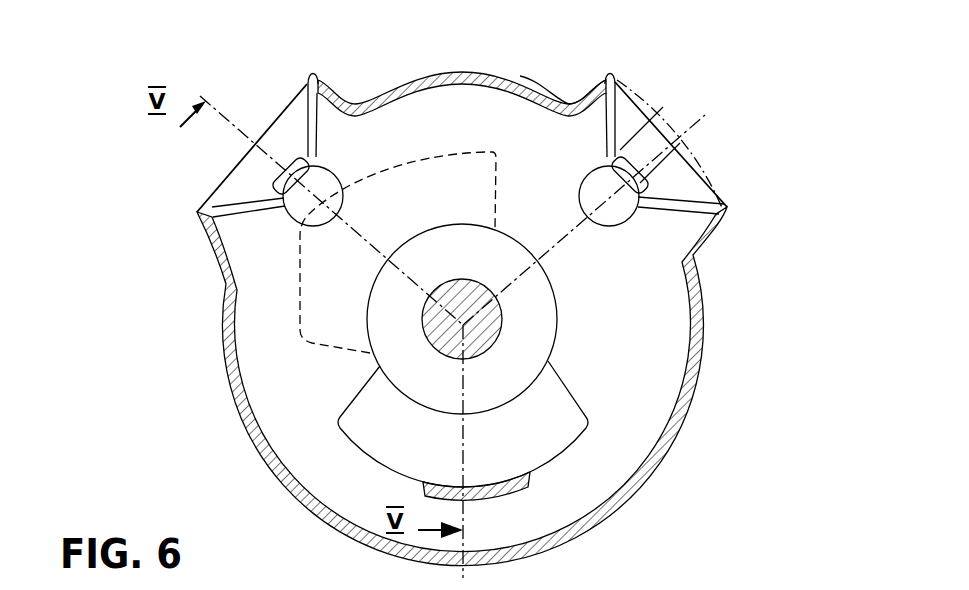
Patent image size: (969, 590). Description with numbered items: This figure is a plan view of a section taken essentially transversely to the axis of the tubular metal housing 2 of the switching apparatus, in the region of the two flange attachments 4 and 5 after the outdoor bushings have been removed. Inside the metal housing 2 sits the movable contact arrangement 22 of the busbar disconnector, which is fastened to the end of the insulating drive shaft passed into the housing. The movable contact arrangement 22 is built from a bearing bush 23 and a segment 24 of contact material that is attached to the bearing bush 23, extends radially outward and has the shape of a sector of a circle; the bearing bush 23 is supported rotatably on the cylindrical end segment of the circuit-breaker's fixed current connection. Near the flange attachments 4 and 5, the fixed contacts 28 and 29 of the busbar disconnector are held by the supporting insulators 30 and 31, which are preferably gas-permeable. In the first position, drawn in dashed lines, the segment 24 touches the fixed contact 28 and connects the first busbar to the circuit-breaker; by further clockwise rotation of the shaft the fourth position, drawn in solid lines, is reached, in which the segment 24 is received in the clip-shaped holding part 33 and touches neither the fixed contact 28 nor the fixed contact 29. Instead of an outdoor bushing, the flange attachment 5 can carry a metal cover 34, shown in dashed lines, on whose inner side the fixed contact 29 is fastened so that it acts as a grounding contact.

The metal housing 2 is at (257, 450).
The flange attachment 4 is at (327, 83).
The flange attachment 5 is at (583, 87).
The movable contact arrangement 22 is at (377, 363).
The bearing bush 23 is at (527, 323).
The segment 24 is at (327, 323).
The fixed contact 28 is at (307, 210).
The fixed contact 29 is at (614, 211).
The supporting insulator 30 is at (300, 97).
The supporting insulator 31 is at (620, 93).
The holding part 33 is at (531, 487).
The metal cover 34 is at (693, 157).